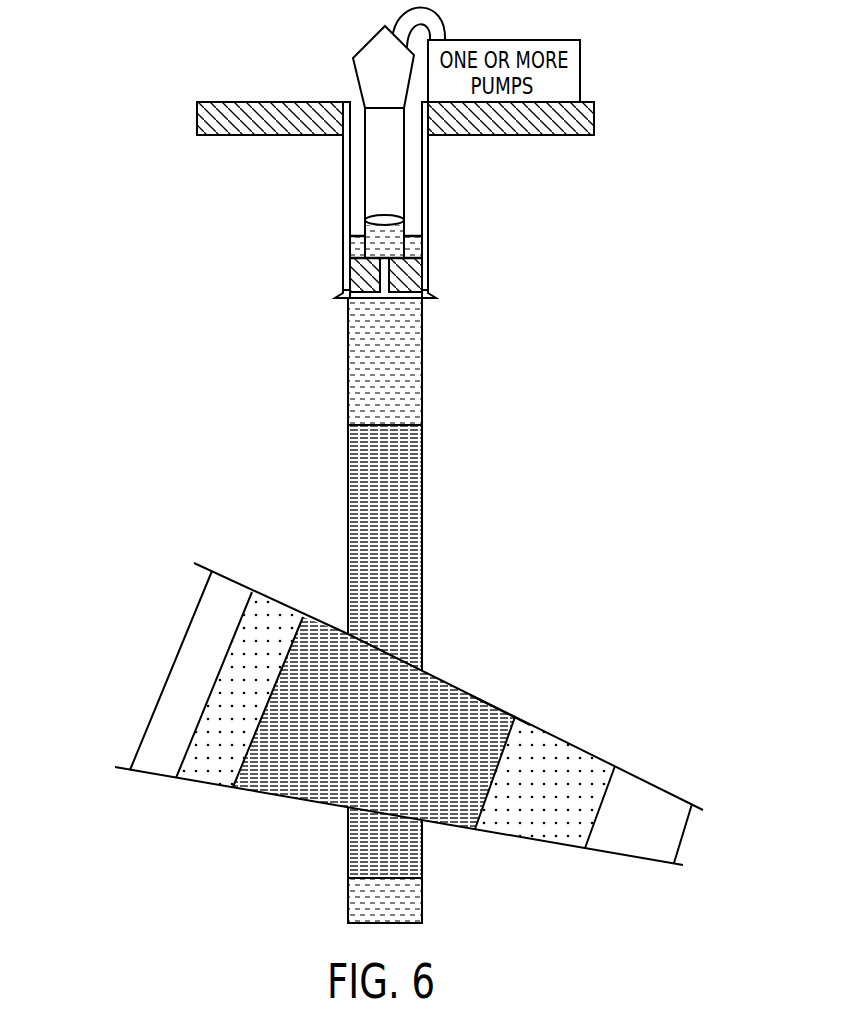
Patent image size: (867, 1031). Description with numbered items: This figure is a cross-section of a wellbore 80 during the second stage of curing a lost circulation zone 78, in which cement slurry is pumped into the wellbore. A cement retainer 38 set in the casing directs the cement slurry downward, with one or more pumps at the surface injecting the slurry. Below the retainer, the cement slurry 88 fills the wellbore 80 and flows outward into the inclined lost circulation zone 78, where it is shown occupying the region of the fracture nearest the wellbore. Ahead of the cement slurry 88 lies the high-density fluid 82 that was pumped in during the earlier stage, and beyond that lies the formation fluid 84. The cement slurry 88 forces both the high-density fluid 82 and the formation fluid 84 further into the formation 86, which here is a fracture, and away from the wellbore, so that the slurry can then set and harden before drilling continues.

The cement retainer 38 is at (415, 275).
The lost circulation zone 78 is at (100, 490).
The wellbore 80 is at (358, 398).
The high-density fluid 82 is at (592, 770).
The formation fluid 84 is at (642, 803).
The formation 86 is at (490, 703).
The cement slurry 88 is at (435, 690).